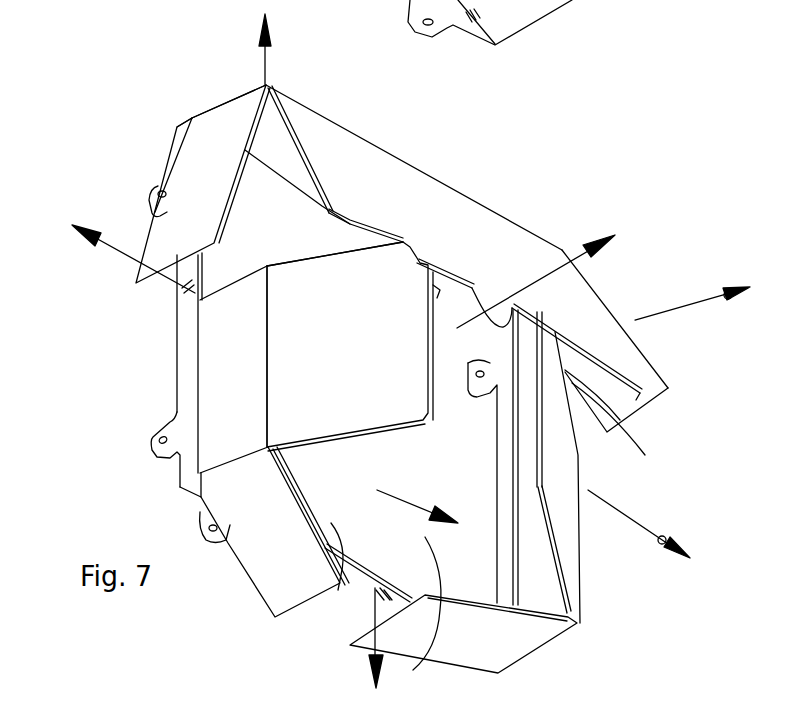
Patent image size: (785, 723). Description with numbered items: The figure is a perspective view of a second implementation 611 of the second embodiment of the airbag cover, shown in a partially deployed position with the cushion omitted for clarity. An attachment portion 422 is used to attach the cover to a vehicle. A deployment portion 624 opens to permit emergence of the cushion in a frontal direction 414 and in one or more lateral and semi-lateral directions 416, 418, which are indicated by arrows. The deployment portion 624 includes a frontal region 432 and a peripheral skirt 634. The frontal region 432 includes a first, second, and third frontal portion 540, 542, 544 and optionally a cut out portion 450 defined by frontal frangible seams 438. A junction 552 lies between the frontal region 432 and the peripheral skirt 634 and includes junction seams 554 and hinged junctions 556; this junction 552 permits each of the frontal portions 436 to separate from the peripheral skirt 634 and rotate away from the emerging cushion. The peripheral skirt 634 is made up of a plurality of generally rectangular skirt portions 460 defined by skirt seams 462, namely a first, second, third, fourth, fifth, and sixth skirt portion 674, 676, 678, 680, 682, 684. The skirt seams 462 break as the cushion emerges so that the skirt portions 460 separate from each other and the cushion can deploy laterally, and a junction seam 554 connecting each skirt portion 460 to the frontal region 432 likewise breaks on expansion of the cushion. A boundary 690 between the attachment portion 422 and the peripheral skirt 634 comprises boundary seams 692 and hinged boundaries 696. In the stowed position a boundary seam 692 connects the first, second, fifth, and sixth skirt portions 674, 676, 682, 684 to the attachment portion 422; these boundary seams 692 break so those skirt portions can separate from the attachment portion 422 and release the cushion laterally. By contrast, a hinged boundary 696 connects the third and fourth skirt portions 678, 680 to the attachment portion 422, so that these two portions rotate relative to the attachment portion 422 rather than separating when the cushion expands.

The second implementation 611 is at (50, 162).
The frontal direction 414 is at (541, 277).
The lateral direction 416 is at (115, 253).
The semi-lateral direction 418 is at (268, 60).
The attachment portion 422 is at (192, 117).
The frontal region 432 is at (395, 160).
The frontal portion 436 is at (575, 543).
The frontal frangible seam 438 is at (337, 256).
The cut out portion 450 is at (487, 305).
The skirt portion 460 is at (190, 152).
The skirt seam 462 is at (218, 287).
The first frontal portion 540 is at (488, 217).
The second frontal portion 542 is at (282, 313).
The third frontal portion 544 is at (565, 467).
The junction 552 is at (267, 402).
The junction seam 554 is at (485, 598).
The hinged junction 556 is at (320, 112).
The deployment portion 624 is at (242, 97).
The peripheral skirt 634 is at (203, 368).
The first skirt portion 674 is at (156, 232).
The second skirt portion 676 is at (643, 367).
The third skirt portion 678 is at (213, 432).
The fourth skirt portion 680 is at (517, 487).
The fifth skirt portion 682 is at (248, 550).
The sixth skirt portion 684 is at (462, 643).
The boundary 690 is at (197, 463).
The boundary seam 692 is at (187, 250).
The hinged boundary 696 is at (283, 173).